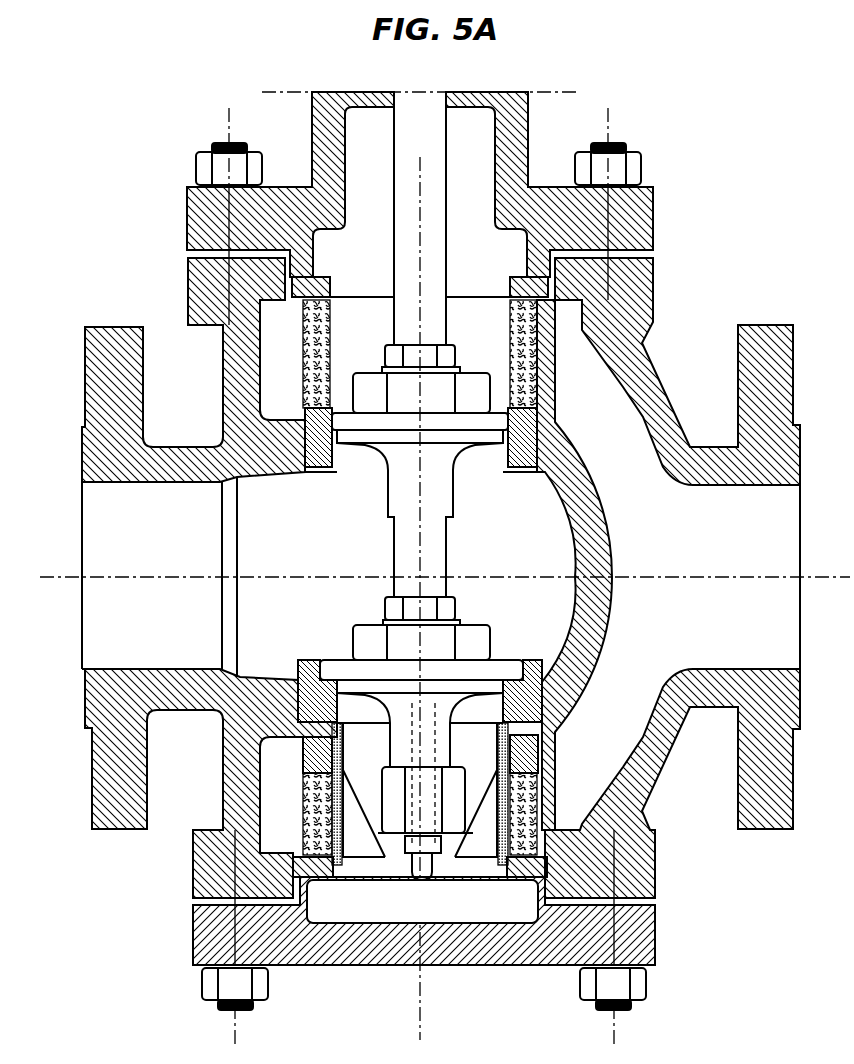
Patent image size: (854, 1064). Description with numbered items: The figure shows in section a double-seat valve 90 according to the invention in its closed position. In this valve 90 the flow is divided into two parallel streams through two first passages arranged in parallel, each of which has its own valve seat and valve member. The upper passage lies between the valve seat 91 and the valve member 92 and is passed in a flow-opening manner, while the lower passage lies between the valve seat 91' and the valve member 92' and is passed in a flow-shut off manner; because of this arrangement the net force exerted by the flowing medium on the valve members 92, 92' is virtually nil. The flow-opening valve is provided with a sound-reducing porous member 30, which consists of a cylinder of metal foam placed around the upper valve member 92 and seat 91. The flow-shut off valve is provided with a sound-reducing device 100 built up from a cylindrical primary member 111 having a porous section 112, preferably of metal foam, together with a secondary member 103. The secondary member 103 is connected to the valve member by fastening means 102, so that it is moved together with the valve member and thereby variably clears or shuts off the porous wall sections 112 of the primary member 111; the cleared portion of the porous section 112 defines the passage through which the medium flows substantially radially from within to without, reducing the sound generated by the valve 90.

The valve 90 is at (645, 93).
The sound-reducing porous member 30 is at (330, 327).
The valve seat 91 is at (403, 416).
The valve member 92 is at (420, 389).
The valve member 92' is at (427, 636).
The valve seat 91' is at (430, 665).
The sound-reducing device 100 is at (282, 836).
The fastening means 102 is at (353, 837).
The secondary member 103 is at (343, 762).
The primary member 111 is at (303, 756).
The porous section 112 is at (307, 837).